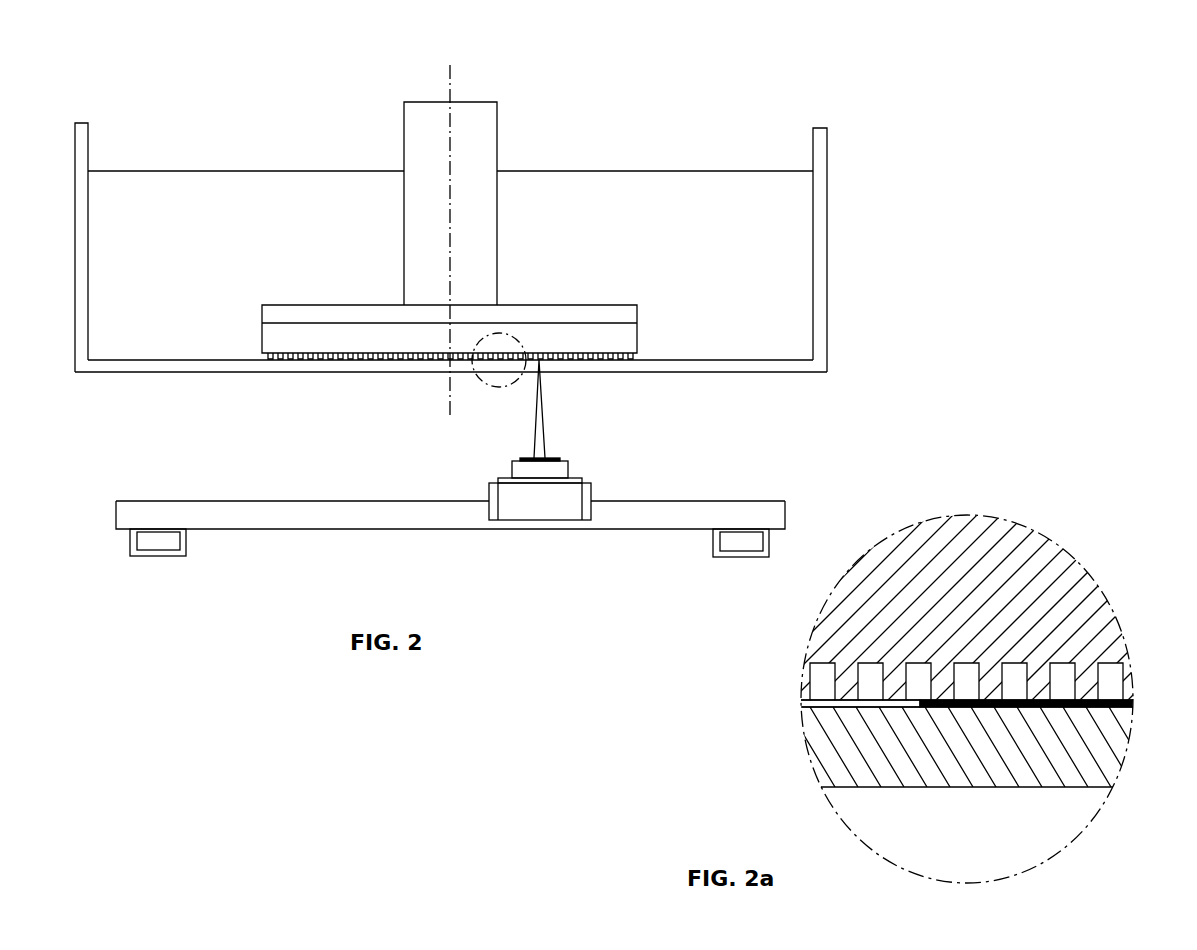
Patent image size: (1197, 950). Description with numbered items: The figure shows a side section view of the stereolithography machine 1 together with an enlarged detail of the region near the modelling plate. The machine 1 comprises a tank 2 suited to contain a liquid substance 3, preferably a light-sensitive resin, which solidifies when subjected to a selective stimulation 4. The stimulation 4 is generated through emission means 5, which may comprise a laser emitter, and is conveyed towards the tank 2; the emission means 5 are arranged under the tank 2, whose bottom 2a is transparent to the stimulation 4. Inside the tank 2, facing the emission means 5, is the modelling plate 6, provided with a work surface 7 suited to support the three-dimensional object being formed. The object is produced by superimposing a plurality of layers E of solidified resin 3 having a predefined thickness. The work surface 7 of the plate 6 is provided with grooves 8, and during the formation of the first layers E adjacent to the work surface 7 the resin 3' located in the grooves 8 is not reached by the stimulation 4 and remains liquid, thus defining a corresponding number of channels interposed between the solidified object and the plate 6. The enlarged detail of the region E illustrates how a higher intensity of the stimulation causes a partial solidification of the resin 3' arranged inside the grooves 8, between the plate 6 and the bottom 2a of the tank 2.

In FIG. 2, the stereolithography machine 1 is at (774, 93).
In FIG. 2, the tank 2 is at (843, 205).
In FIG. 2, the bottom 2a is at (734, 367).
In FIG. 2a, the bottom 2a is at (872, 758).
In FIG. 2, the liquid substance 3 is at (450, 126).
In FIG. 2a, the liquid substance 3 is at (923, 675).
In FIG. 2a, the resin located in the grooves 3' is at (965, 612).
In FIG. 2, the selective stimulation 4 is at (553, 420).
In FIG. 2, the emission means 5 is at (582, 535).
In FIG. 2, the modelling plate 6 is at (580, 333).
In FIG. 2a, the modelling plate 6 is at (908, 577).
In FIG. 2, the work surface 7 is at (320, 350).
In FIG. 2a, the work surface 7 is at (865, 708).
In FIG. 2a, the grooves 8 is at (898, 700).
In FIG. 2, the layers E is at (513, 364).
In FIG. 2a, the layers E is at (1088, 712).